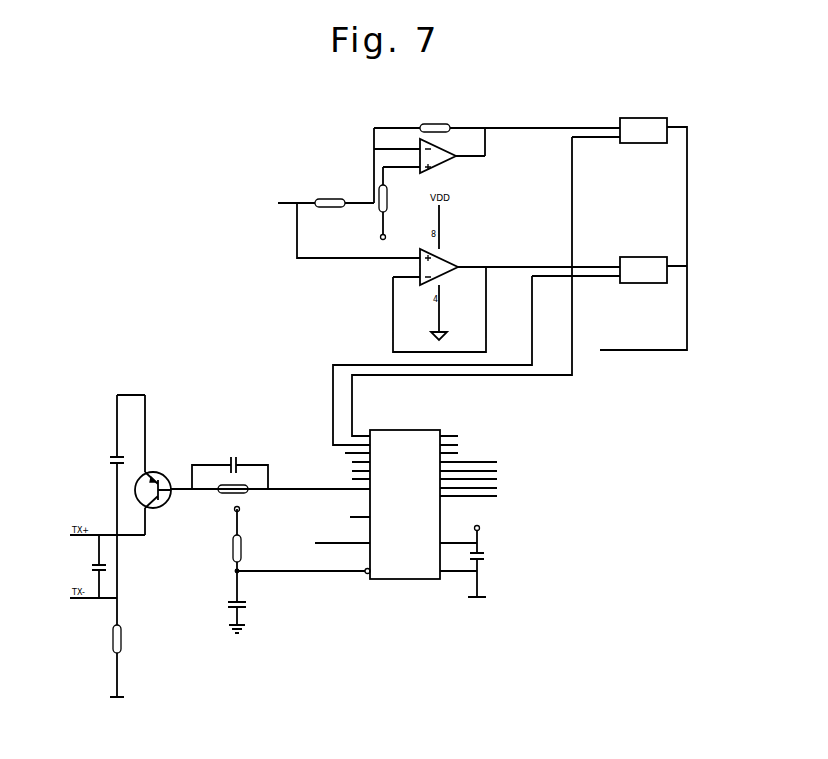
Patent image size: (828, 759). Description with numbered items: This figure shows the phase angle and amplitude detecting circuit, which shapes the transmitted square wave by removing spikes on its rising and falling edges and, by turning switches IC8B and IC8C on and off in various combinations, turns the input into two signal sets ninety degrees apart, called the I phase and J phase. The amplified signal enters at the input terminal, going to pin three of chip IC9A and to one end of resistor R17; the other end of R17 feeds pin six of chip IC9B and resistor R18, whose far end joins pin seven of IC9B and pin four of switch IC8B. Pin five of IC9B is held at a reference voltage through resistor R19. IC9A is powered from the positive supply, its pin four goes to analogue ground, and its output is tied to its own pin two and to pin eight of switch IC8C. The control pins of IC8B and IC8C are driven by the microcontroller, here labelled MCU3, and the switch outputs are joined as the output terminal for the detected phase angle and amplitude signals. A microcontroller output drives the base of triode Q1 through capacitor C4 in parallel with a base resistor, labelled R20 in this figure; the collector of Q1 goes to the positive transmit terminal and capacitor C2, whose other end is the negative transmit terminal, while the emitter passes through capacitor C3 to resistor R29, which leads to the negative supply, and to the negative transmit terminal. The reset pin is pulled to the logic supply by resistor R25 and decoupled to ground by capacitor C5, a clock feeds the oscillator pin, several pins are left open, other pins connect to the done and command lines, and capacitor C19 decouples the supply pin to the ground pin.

The resistor R17 is at (326, 195).
The resistor R18 is at (435, 121).
The resistor R19 is at (393, 203).
The resistor 1.5K (3.3K) R20 is at (267, 484).
The resistor R25 is at (248, 535).
The resistor R29 is at (128, 638).
The capacitor C2 is at (89, 570).
The capacitor C3 is at (102, 464).
The capacitor C4 is at (230, 461).
The capacitor C5 is at (226, 602).
The capacitor C19 is at (485, 556).
The triode Q1 is at (179, 493).
The chip IC9A is at (446, 259).
The chip IC9B is at (448, 165).
The switch IC8B is at (644, 149).
The switch IC8C is at (644, 287).
The microcontroller AT90S1200 MCU3 is at (334, 490).